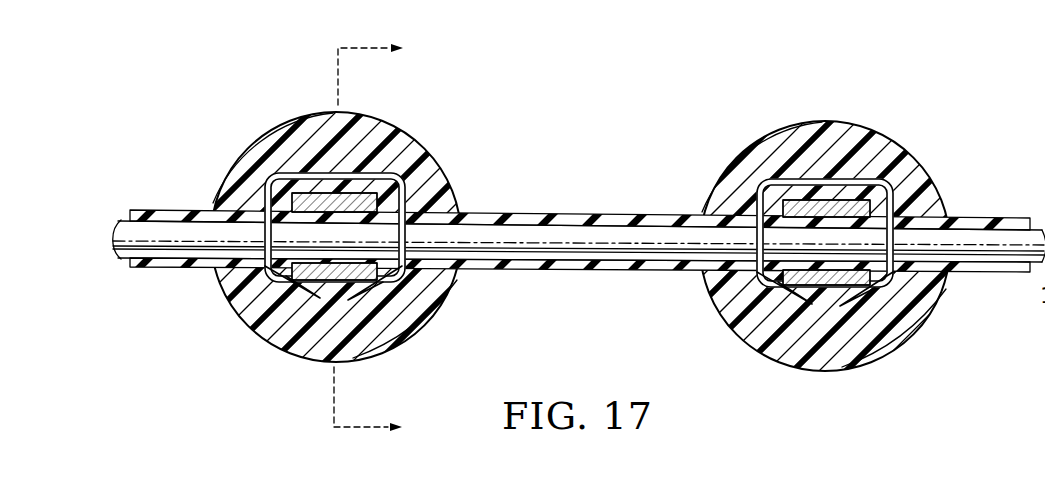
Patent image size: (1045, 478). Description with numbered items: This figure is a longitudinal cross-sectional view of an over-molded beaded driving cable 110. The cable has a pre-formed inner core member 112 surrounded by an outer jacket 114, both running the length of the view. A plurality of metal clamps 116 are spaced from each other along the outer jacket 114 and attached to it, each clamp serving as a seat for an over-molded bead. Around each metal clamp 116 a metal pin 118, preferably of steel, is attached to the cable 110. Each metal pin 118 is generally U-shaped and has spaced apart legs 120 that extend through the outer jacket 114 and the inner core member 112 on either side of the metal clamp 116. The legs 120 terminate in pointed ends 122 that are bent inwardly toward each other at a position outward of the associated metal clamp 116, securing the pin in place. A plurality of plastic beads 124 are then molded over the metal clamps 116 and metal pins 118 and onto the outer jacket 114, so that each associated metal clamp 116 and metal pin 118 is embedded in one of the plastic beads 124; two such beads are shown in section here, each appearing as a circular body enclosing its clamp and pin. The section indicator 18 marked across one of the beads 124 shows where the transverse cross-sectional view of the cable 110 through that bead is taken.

The over-molded beaded driving cable 110 is at (606, 99).
The inner core member 112 is at (623, 238).
The outer jacket 114 is at (513, 270).
The metal clamp 116 is at (322, 198).
The metal pin 118 is at (392, 195).
The legs 120 is at (267, 200).
The pointed ends 122 is at (345, 307).
The plastic bead 124 is at (270, 140).
The section line for FIG. 18 is at (394, 240).